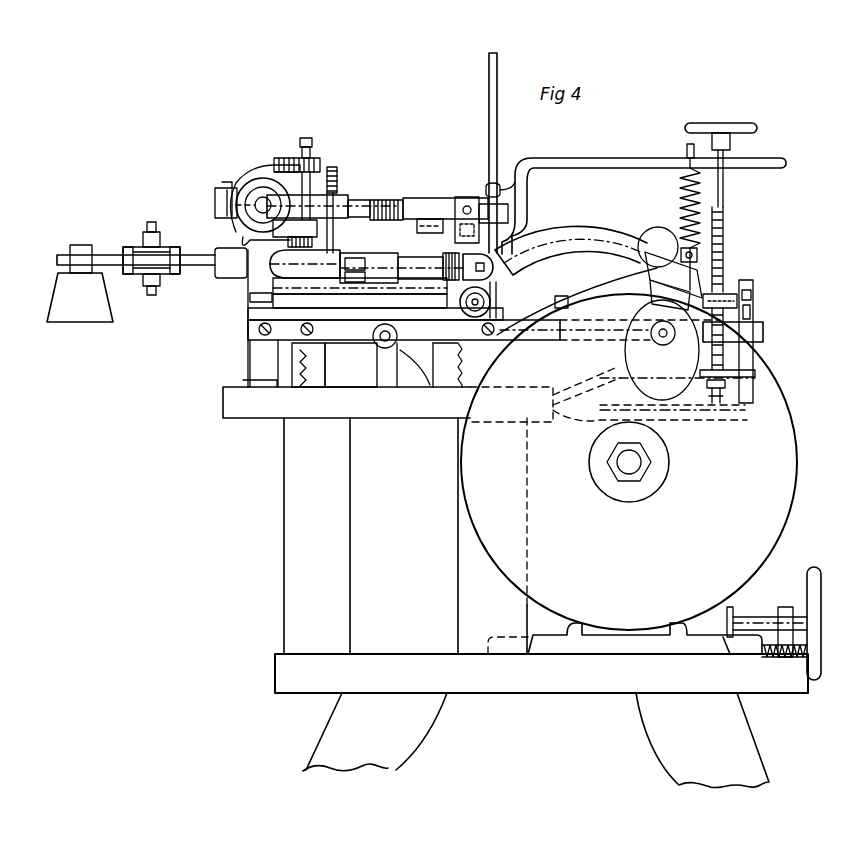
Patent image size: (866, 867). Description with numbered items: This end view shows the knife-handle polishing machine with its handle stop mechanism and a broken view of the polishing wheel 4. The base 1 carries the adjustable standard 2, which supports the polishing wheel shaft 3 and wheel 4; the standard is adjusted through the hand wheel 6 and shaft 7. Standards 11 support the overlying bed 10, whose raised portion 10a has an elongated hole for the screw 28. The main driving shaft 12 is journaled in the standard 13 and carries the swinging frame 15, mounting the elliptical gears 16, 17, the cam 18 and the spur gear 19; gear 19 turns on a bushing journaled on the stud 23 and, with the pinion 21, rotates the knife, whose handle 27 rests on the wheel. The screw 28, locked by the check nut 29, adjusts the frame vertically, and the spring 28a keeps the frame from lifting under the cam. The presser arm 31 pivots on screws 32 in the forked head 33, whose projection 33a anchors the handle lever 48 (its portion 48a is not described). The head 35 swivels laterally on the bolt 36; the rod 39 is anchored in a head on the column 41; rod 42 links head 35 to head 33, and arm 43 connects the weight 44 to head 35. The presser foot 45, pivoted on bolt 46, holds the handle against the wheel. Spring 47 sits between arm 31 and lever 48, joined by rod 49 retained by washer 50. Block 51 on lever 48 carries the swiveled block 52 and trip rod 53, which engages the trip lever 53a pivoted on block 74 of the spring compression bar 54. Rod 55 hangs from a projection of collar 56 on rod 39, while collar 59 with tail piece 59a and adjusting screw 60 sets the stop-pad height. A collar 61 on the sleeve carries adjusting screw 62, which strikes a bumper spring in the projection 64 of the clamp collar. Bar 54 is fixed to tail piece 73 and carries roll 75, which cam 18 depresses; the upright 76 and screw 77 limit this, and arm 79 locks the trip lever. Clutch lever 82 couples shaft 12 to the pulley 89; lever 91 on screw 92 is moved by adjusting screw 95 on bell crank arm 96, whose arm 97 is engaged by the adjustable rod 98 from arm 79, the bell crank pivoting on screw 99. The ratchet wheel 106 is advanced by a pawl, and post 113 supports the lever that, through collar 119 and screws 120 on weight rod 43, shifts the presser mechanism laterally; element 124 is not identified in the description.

The base 1 is at (541, 721).
The standard 2 is at (625, 639).
The polishing wheel shaft 3 is at (629, 462).
The polishing wheel 4 is at (629, 462).
The hand wheel 6 is at (815, 566).
The shaft 7 is at (767, 623).
The overlying bed 10 is at (485, 395).
The raised portion of the bed 10a is at (756, 373).
The standards 11 is at (405, 536).
The main driving shaft 12 is at (498, 307).
The standard 13 is at (440, 370).
The swinging frame 15 is at (755, 295).
The elliptical gear 16 is at (577, 301).
The elliptical gear 17 is at (724, 238).
The cam 18 is at (650, 240).
The spur gear 19 is at (593, 250).
The pinion 21 is at (491, 296).
The stud 23 is at (570, 298).
The knife handle 27 is at (726, 352).
The screw 28 is at (724, 220).
The spring 28a is at (712, 403).
The check nut 29 is at (738, 292).
The presser arm 31 is at (588, 228).
The screws 32 is at (495, 272).
The forked head 33 is at (425, 218).
The projection of the forked head 33a is at (412, 197).
The head 35 is at (272, 262).
The bolt 36 is at (248, 298).
The rod 39 is at (220, 190).
The column 41 is at (263, 363).
The rod 42 is at (345, 255).
The arm 43 is at (60, 258).
The weight 44 is at (80, 283).
The presser foot 45 is at (727, 290).
The bolt 46 is at (682, 246).
The spring 47 is at (686, 193).
The handle lever 48 is at (608, 158).
The pipe end 48a is at (770, 152).
The rod 49 is at (685, 129).
The washer 50 is at (686, 152).
The block 51 is at (458, 200).
The overlying block 52 is at (468, 196).
The trip rod 53 is at (495, 186).
The trip or locking lever 53a is at (489, 70).
The spring compression bar 54 is at (248, 326).
The rod 55 is at (372, 200).
The collar 56 is at (236, 215).
The collar 59 is at (255, 180).
The tail piece 59a is at (236, 205).
The adjusting screw 60 is at (232, 275).
The collar 61 is at (262, 170).
The adjusting screw 62 is at (305, 138).
The projection 64 is at (298, 232).
The tail piece 73 is at (248, 312).
The block 74 is at (535, 345).
The roll 75 is at (662, 350).
The upright 76 is at (755, 280).
The adjusting screw 77 is at (755, 318).
The arm 79 is at (386, 198).
The clutch lever 82 is at (478, 312).
The continuously running pulley 89 is at (527, 222).
The lever 91 is at (308, 365).
The screw 92 is at (390, 258).
The adjusting screw 95 is at (451, 379).
The bell crank lever arm 96 is at (385, 348).
The crank lever arm 97 is at (351, 365).
The adjustable rod 98 is at (337, 178).
The screw 99 is at (372, 345).
The ratchet wheel 106 is at (318, 370).
The post 113 is at (290, 368).
The collar 119 is at (145, 250).
The screws 120 is at (152, 228).
The link 124 is at (460, 370).